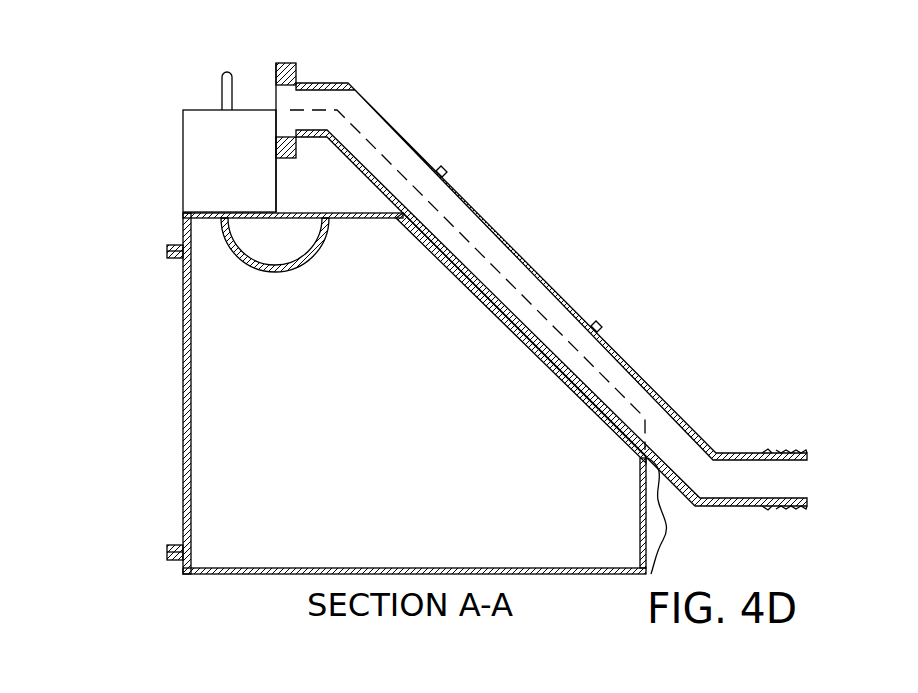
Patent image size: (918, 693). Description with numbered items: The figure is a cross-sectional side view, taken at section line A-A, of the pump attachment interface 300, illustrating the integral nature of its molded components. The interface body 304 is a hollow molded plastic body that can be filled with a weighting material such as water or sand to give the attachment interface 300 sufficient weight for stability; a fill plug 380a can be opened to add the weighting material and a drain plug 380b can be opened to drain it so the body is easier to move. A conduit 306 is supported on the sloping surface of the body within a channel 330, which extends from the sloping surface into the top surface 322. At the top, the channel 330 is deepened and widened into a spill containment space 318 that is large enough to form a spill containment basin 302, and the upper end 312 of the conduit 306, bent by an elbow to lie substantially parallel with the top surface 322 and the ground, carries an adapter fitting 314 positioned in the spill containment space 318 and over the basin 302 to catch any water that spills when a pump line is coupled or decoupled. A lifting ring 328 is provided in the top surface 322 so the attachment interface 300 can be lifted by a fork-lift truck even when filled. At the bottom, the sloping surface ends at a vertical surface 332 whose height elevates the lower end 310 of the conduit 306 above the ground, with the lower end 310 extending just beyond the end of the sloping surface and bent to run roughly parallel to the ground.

The pump attachment interface 300 is at (158, 88).
The spill containment basin 302 is at (242, 257).
The interface body 304 is at (183, 397).
The conduit 306 is at (455, 190).
The lower end of conduit 310 is at (729, 405).
The upper end of conduit 312 is at (357, 68).
The adapter fitting 314 is at (276, 137).
The spill containment space 318 is at (240, 183).
The top surface 322 is at (205, 110).
The lifting ring 328 is at (226, 72).
The channel 330 is at (522, 292).
The vertical surface 332 is at (655, 485).
The fill plug 380a is at (172, 245).
The drain plug 380b is at (172, 545).